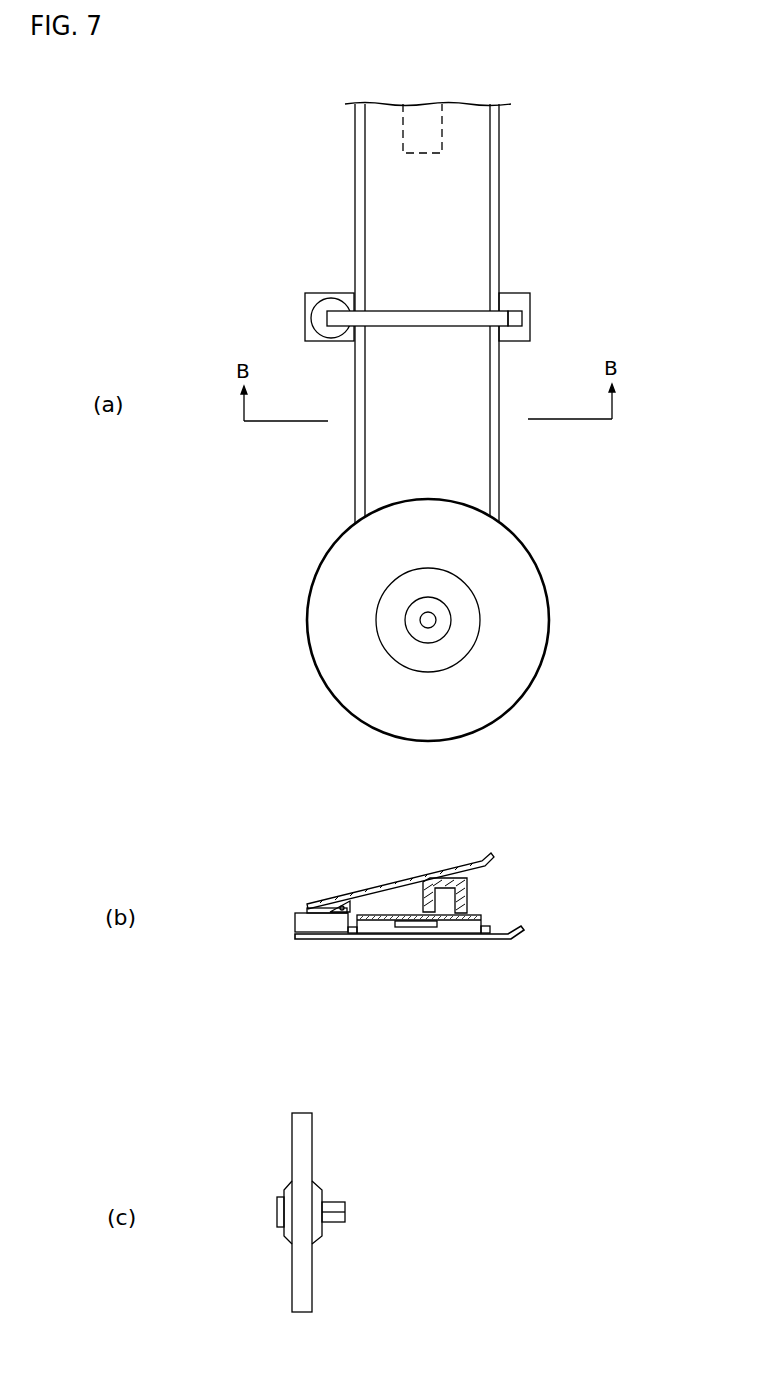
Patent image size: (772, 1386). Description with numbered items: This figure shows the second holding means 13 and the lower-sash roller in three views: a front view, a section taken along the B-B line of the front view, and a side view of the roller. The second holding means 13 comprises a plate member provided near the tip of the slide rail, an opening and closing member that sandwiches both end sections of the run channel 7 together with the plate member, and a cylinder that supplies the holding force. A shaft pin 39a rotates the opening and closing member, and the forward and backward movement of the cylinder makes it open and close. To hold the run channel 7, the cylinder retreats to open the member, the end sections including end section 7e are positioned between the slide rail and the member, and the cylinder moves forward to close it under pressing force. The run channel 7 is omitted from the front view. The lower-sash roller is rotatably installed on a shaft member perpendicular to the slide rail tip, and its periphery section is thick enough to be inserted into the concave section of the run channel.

The run channel 7 is at (438, 877).
The end section of the run channel 7e is at (467, 893).
The second holding means 13 is at (580, 250).
The shaft pin 39a is at (340, 905).